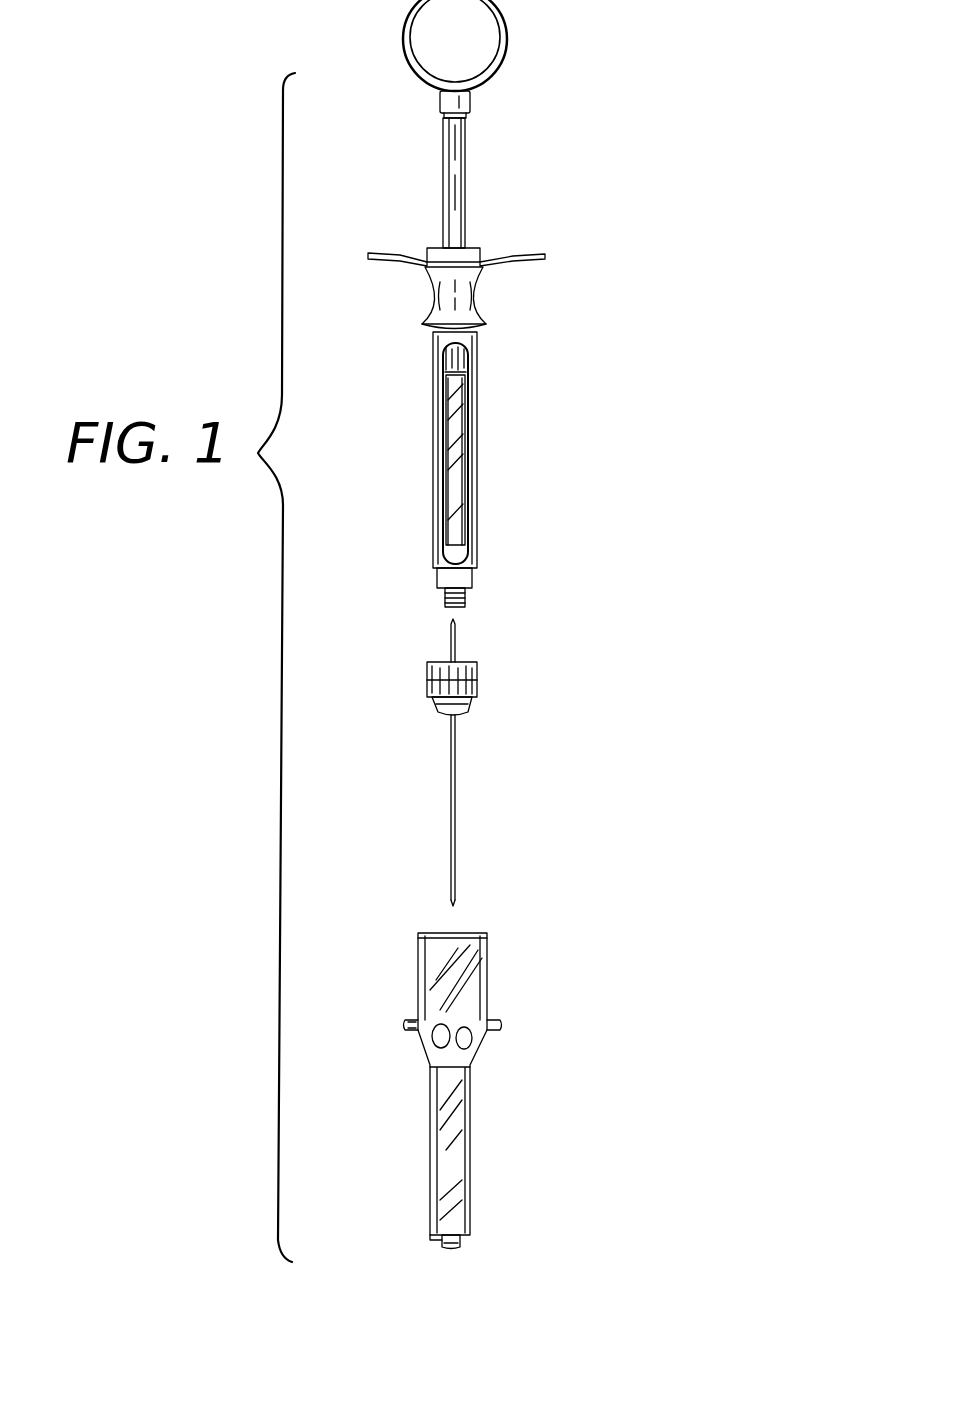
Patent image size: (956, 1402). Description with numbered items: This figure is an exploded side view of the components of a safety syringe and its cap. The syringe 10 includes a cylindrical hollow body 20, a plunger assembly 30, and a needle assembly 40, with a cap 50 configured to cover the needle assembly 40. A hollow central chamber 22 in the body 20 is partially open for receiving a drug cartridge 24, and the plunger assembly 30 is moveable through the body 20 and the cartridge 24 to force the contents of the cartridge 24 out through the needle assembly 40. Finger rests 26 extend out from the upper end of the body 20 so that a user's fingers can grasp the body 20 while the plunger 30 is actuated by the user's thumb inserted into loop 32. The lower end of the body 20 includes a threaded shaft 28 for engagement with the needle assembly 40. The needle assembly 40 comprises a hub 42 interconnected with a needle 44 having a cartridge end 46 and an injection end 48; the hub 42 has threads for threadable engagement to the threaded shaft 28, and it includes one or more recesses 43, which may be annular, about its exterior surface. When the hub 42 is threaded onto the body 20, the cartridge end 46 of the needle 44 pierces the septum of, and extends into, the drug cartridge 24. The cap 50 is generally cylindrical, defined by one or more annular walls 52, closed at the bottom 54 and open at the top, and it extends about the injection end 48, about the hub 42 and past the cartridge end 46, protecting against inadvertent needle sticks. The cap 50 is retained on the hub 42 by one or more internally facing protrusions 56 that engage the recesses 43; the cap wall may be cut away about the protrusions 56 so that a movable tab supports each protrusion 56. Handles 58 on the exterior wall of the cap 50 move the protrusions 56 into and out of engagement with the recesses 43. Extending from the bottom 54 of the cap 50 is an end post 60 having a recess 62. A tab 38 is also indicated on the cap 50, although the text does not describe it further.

The syringe 10 is at (563, 340).
The cylindrical hollow body 20 is at (482, 490).
The hollow central chamber 22 is at (465, 427).
The drug cartridge 24 is at (453, 532).
The finger rests 26 is at (540, 252).
The threaded shaft 28 is at (465, 597).
The plunger assembly 30 is at (470, 180).
The loop 32 is at (510, 38).
The tab 38 is at (413, 1022).
The needle assembly 40 is at (490, 686).
The hub 42 is at (428, 683).
The recesses 43 is at (428, 700).
The needle 44 is at (458, 795).
The cartridge end 46 is at (457, 636).
The injection end 48 is at (455, 888).
The cap 50 is at (508, 968).
The annular walls 52 is at (488, 1000).
The bottom 54 is at (465, 1245).
The internally facing protrusions 56 is at (478, 1055).
The handles 58 is at (500, 1027).
The end post 60 is at (445, 1246).
The recess 62 is at (430, 1238).